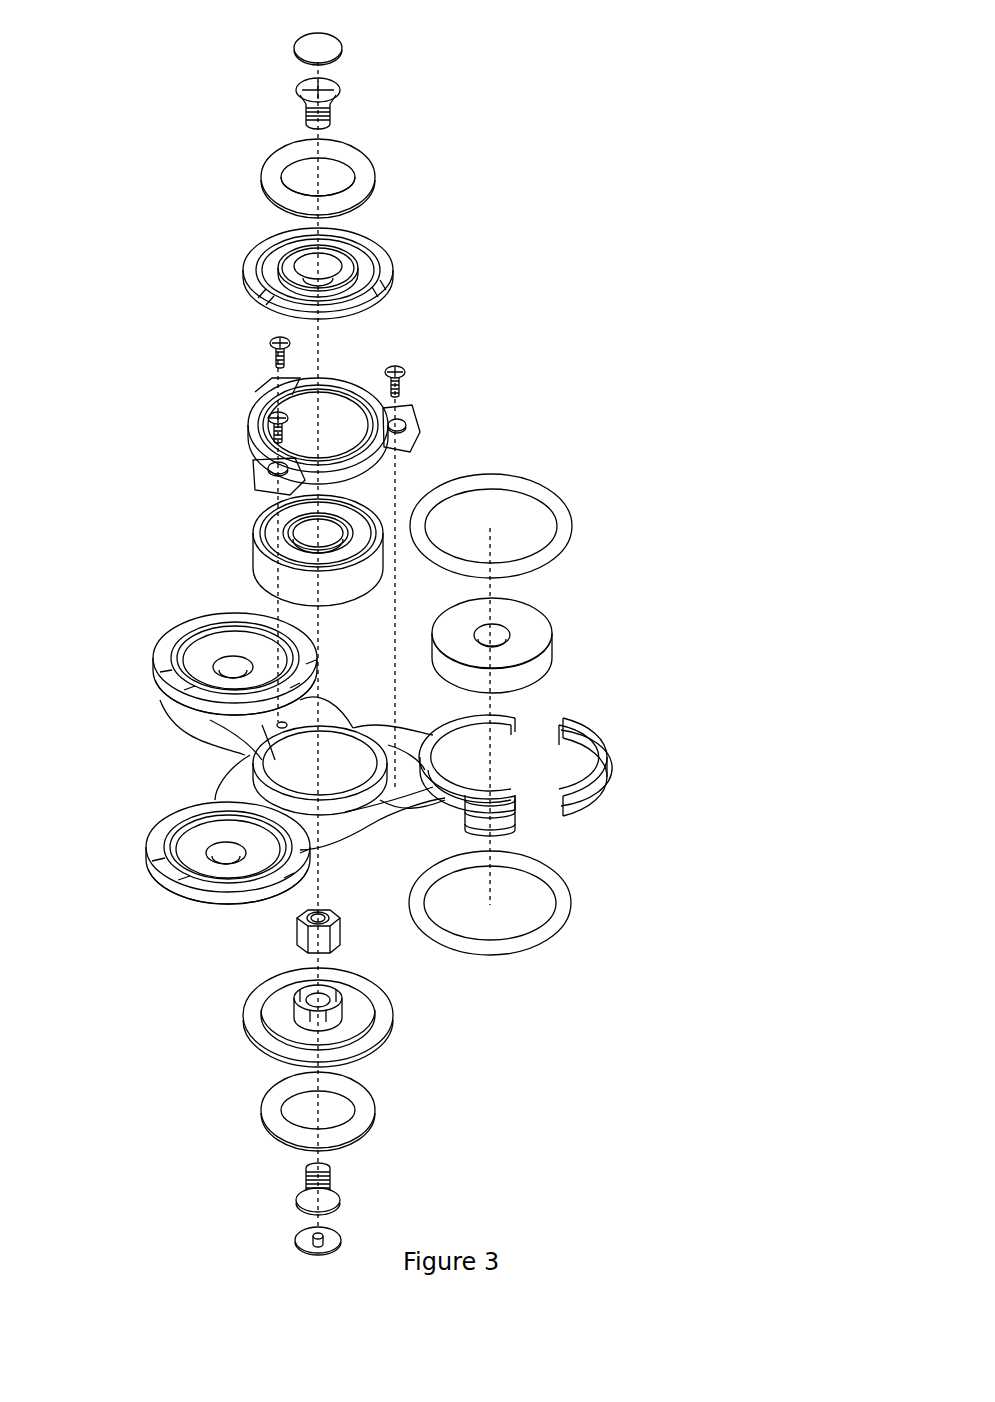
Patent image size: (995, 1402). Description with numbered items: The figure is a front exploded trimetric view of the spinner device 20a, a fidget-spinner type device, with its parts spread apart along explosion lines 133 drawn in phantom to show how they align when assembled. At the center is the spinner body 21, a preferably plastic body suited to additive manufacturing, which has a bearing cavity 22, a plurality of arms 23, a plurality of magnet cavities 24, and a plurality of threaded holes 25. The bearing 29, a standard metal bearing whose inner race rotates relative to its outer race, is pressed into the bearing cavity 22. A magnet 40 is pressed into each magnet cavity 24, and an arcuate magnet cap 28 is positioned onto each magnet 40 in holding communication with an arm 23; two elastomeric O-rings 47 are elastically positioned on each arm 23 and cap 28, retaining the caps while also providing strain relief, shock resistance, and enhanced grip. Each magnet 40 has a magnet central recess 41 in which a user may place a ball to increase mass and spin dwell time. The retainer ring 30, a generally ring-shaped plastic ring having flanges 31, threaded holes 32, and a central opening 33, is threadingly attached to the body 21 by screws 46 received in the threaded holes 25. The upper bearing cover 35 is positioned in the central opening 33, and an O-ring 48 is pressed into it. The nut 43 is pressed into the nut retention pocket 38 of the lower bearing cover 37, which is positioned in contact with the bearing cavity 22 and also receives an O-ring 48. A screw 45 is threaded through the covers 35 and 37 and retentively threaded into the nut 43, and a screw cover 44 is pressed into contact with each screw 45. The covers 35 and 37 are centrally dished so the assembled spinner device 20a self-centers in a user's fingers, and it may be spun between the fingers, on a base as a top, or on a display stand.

The spinner device 20a is at (500, 1005).
The spinner body 21 is at (338, 845).
The bearing cavity 22 is at (285, 777).
The arm 23 is at (520, 820).
The magnet cavity 24 is at (504, 769).
The threaded hole 25 is at (292, 718).
The magnet cap 28 is at (606, 735).
The bearing 29 is at (252, 532).
The retainer ring 30 is at (246, 400).
The flange 31 is at (247, 470).
The threaded hole 32 is at (413, 422).
The central opening 33 is at (331, 414).
The upper bearing cover 35 is at (388, 250).
The lower bearing cover 37 is at (386, 1044).
The nut retention pocket 38 is at (300, 1015).
The magnet 40 is at (550, 612).
The magnet central recess 41 is at (497, 640).
The nut 43 is at (292, 935).
The screw cover 44 is at (350, 36).
The screw 45 is at (345, 84).
The screw 46 is at (267, 341).
The O-ring 47 is at (556, 487).
The O-ring 48 is at (375, 160).
The explosion line 133 is at (313, 173).